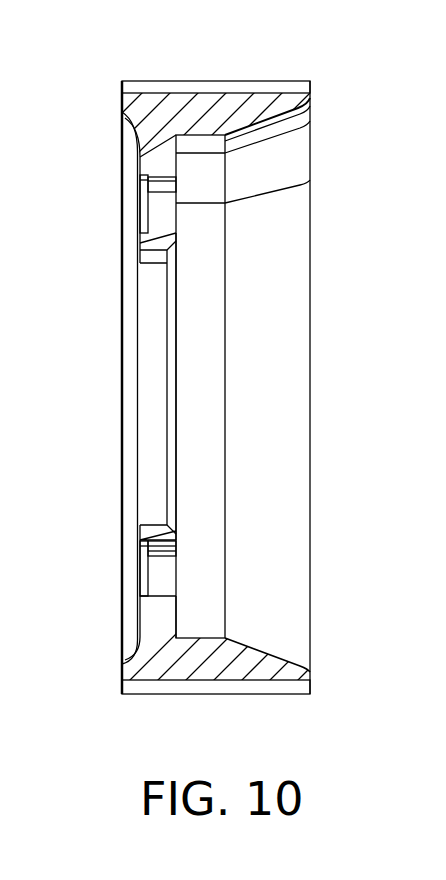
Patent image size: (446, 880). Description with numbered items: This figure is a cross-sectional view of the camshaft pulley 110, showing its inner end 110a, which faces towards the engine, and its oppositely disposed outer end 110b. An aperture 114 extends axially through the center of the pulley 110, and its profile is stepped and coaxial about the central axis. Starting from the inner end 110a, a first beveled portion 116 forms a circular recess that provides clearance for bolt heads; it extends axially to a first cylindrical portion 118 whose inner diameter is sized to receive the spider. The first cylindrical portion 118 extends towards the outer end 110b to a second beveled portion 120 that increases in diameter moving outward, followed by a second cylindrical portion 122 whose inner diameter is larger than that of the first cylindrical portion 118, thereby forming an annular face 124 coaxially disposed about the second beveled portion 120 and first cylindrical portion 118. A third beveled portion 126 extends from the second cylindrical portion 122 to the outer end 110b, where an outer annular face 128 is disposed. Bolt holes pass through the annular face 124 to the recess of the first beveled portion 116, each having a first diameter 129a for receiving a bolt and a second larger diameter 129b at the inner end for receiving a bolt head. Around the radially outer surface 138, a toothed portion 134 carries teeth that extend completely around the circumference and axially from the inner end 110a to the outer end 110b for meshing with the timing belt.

The camshaft pulley 110 is at (310, 102).
The inner end 110a is at (121, 152).
The outer end 110b is at (310, 188).
The aperture 114 is at (153, 400).
The first beveled portion 116 is at (136, 504).
The first cylindrical portion 118 is at (153, 335).
The second beveled portion 120 is at (172, 493).
The second cylindrical portion 122 is at (203, 435).
The annular face 124 is at (179, 615).
The third beveled portion 126 is at (285, 363).
The outer annular face 128 is at (312, 670).
The first diameter 129a is at (163, 570).
The second larger diameter 129b is at (141, 585).
The toothed portion 134 is at (195, 82).
The radially outer surface 138 is at (236, 694).